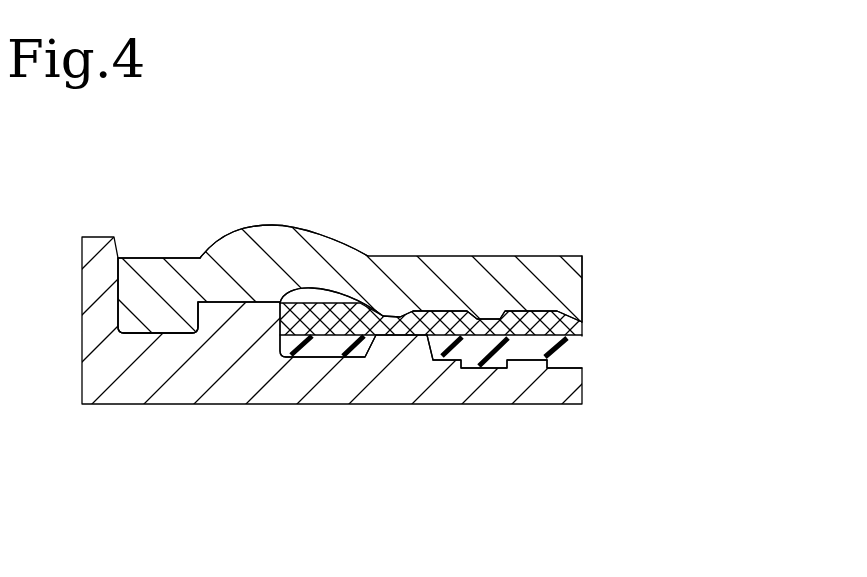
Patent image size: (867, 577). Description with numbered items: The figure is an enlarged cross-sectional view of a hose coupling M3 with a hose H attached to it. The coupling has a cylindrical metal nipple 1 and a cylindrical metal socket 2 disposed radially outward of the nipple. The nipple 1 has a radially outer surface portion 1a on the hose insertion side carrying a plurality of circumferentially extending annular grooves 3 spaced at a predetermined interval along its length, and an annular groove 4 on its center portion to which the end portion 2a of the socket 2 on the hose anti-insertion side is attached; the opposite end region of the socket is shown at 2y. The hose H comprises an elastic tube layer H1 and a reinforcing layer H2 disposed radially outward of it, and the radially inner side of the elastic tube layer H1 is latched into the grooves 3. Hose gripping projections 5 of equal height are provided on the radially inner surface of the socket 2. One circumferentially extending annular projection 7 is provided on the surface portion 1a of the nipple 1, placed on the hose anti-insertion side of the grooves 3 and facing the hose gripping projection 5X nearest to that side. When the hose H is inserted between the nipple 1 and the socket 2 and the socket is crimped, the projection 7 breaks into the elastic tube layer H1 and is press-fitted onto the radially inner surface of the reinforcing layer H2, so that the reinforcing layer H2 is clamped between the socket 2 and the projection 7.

The nipple 1 is at (135, 408).
The radially outer surface portion 1a is at (452, 318).
The socket 2 is at (437, 253).
The end portion 2a is at (149, 268).
The cover end portion 2y is at (548, 310).
The annular grooves 3 is at (580, 353).
The annular groove 4 is at (178, 317).
The hose gripping projections 5 is at (462, 363).
The hose gripping projection 5X is at (385, 338).
The annular projection 7 is at (412, 308).
The hose H is at (586, 321).
The elastic tube layer H1 is at (311, 352).
The reinforcing layer H2 is at (320, 308).
The hose coupling M3 is at (268, 222).